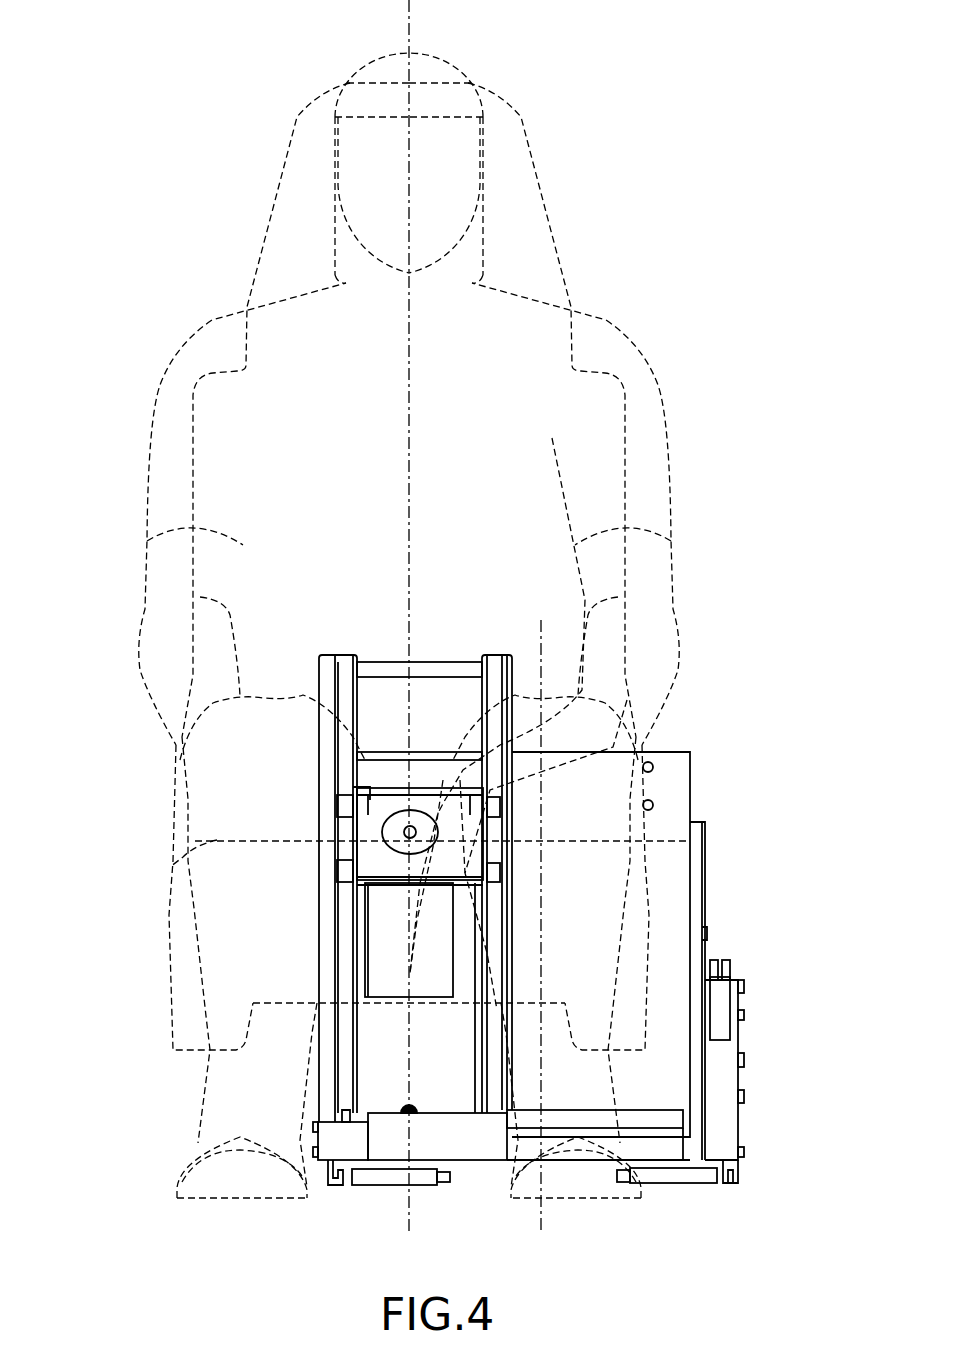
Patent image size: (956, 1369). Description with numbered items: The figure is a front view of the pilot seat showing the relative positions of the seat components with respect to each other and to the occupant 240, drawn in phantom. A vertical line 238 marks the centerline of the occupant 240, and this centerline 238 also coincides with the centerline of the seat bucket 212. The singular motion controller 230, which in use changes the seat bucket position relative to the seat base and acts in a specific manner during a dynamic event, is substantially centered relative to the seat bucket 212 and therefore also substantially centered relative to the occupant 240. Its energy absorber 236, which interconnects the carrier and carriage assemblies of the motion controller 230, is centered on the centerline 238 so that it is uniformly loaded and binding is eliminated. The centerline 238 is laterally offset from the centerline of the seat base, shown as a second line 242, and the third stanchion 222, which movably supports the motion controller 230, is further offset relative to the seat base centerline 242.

The seat bucket 212 is at (647, 855).
The third stanchion 222 is at (512, 732).
The singular motion controller 230 is at (336, 830).
The energy absorber 236 is at (385, 942).
The centerline 238 is at (409, 305).
The occupant 240 is at (597, 372).
The seat base centerline 242 is at (543, 675).